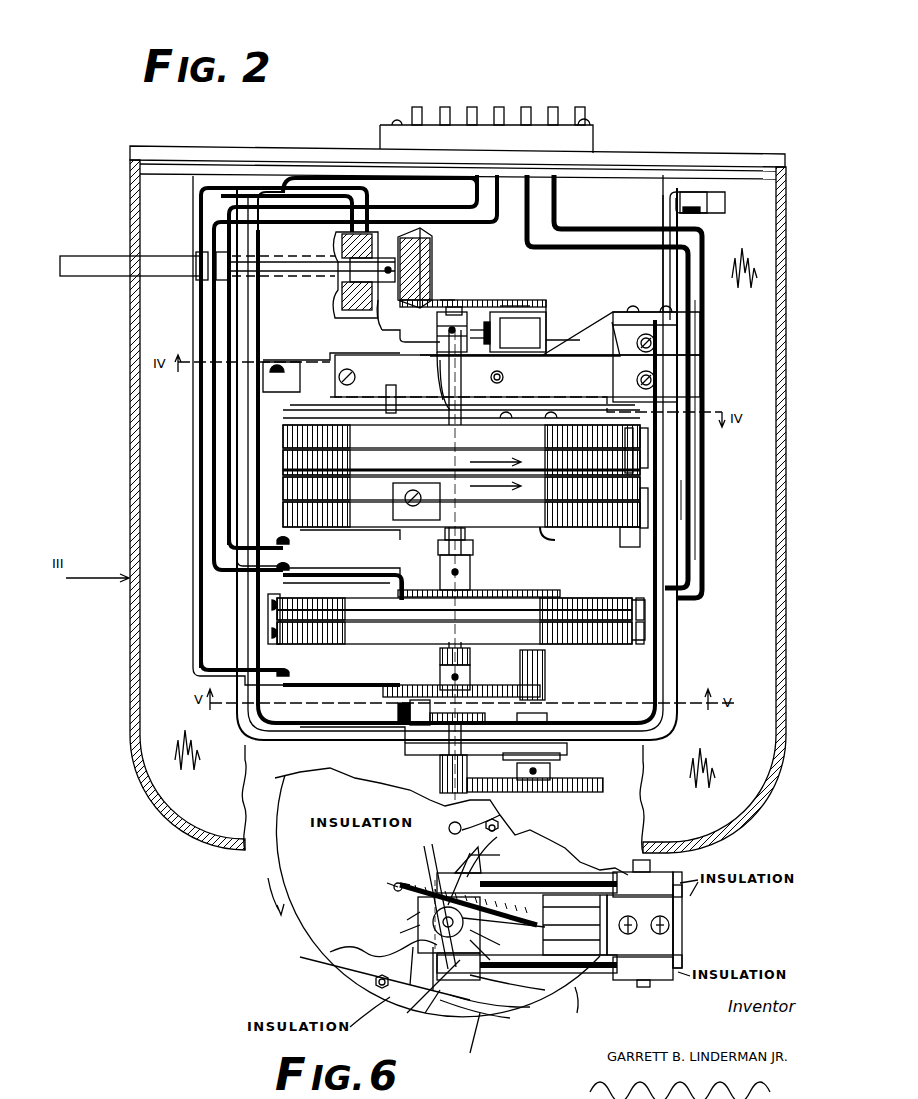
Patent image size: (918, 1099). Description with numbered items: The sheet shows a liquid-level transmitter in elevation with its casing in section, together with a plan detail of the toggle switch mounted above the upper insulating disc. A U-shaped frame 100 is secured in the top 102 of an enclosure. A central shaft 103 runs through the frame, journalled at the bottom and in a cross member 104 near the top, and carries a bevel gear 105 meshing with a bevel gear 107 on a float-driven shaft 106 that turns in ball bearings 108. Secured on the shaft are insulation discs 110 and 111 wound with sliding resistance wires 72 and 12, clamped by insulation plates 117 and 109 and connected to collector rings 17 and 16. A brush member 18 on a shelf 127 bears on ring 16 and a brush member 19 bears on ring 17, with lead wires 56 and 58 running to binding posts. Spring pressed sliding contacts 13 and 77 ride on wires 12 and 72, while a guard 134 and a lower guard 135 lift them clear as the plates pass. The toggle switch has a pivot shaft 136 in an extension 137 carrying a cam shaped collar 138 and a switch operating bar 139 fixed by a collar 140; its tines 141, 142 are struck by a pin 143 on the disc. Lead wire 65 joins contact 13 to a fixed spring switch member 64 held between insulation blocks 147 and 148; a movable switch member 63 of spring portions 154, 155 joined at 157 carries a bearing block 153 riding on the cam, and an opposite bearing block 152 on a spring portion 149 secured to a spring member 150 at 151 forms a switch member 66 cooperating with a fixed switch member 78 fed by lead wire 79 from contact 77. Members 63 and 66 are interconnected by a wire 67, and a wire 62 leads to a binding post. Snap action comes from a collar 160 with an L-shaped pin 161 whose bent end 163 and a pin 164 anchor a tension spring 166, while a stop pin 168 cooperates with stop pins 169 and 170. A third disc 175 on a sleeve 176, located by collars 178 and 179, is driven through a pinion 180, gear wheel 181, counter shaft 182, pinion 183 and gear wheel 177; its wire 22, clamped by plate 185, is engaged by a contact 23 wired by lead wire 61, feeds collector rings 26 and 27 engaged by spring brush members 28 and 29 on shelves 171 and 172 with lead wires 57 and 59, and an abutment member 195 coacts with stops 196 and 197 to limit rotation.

In FIG. 2, the sliding resistance wire 12 is at (283, 447).
In FIG. 2, the spring pressed sliding contact 13 is at (657, 453).
In FIG. 2, the collector ring 16 is at (548, 418).
In FIG. 2, the collector ring 17 is at (535, 532).
In FIG. 2, the spring pressed brush member 18 is at (328, 358).
In FIG. 2, the spring pressed brush member 19 is at (338, 567).
In FIG. 2, the sliding contact wire 22 is at (600, 652).
In FIG. 2, the spring pressed contact 23 is at (642, 614).
In FIG. 2, the collector ring 26 is at (382, 648).
In FIG. 2, the collector ring 27 is at (524, 584).
In FIG. 2, the spring brush member 28 is at (320, 686).
In FIG. 2, the spring brush member 29 is at (350, 535).
In FIG. 2, the lead wire 56 is at (290, 176).
In FIG. 2, the lead wire 57 is at (196, 628).
In FIG. 2, the lead wire 58 is at (322, 206).
In FIG. 2, the lead wire 59 is at (227, 523).
In FIG. 2, the lead wire 61 is at (704, 553).
In FIG. 2, the wire 62 is at (700, 349).
In FIG. 6, the wire 62 is at (683, 890).
In FIG. 6, the movable switch member 63 is at (612, 881).
In FIG. 6, the fixed spring switch member 64 is at (536, 876).
In FIG. 2, the lead wire 65 is at (705, 397).
In FIG. 6, the lead wire 65 is at (672, 873).
In FIG. 6, the switch member 66 is at (587, 1010).
In FIG. 6, the wire 67 is at (684, 917).
In FIG. 2, the sliding contact wire 72 is at (612, 538).
In FIG. 2, the spring pressed sliding contact 77 is at (696, 505).
In FIG. 6, the fixed spring switch member 78 is at (606, 975).
In FIG. 2, the lead wire 79 is at (697, 484).
In FIG. 6, the lead wire 79 is at (668, 960).
In FIG. 2, the U-shaped frame 100 is at (680, 676).
In FIG. 2, the top 102 is at (743, 141).
In FIG. 2, the central shaft 103 is at (474, 548).
In FIG. 6, the central shaft 103 is at (496, 813).
In FIG. 2, the cross member 104 is at (560, 301).
In FIG. 2, the bevel gear 105 is at (475, 301).
In FIG. 2, the shaft 106 is at (107, 255).
In FIG. 2, the bevel gear 107 is at (433, 258).
In FIG. 2, the ball bearings 108 is at (342, 253).
In FIG. 2, the insulation plate 109 is at (645, 468).
In FIG. 2, the insulation disc 110 is at (290, 490).
In FIG. 2, the insulation disc 111 is at (325, 425).
In FIG. 6, the insulation disc 111 is at (290, 861).
In FIG. 2, the insulation plate 117 is at (416, 503).
In FIG. 2, the shelf 127 is at (277, 388).
In FIG. 2, the guard 134 is at (624, 432).
In FIG. 2, the lower guard 135 is at (467, 556).
In FIG. 2, the pivot rod or shaft 136 is at (456, 299).
In FIG. 6, the pivot rod or shaft 136 is at (450, 904).
In FIG. 2, the extension 137 is at (570, 340).
In FIG. 6, the extension 137 is at (575, 925).
In FIG. 6, the cam shaped collar 138 is at (544, 990).
In FIG. 2, the switch operating bar 139 is at (430, 365).
In FIG. 6, the switch operating bar 139 is at (407, 920).
In FIG. 2, the collar 140 is at (443, 360).
In FIG. 6, the tine 141 is at (347, 949).
In FIG. 6, the tine 142 is at (455, 822).
In FIG. 2, the pin 143 is at (386, 395).
In FIG. 6, the pin 143 is at (500, 828).
In FIG. 6, the insulation block 147 is at (660, 990).
In FIG. 6, the insulation block 148 is at (649, 926).
In FIG. 2, the spring portion 149 is at (517, 376).
In FIG. 6, the spring portion 149 is at (505, 1006).
In FIG. 6, the spring member 150 is at (485, 1016).
In FIG. 2, the securing point 151 is at (513, 375).
In FIG. 6, the securing point 151 is at (463, 1043).
In FIG. 6, the bearing block 152 is at (415, 997).
In FIG. 6, the bearing block 153 is at (433, 868).
In FIG. 6, the spring portion 154 is at (494, 863).
In FIG. 6, the spring portion 155 is at (571, 903).
In FIG. 6, the securing point 157 is at (497, 837).
In FIG. 2, the collar 160 is at (437, 332).
In FIG. 6, the collar 160 is at (400, 933).
In FIG. 2, the L-shaped rod or pin 161 is at (405, 327).
In FIG. 6, the L-shaped rod or pin 161 is at (387, 883).
In FIG. 2, the bent end 163 is at (402, 303).
In FIG. 6, the bent end 163 is at (400, 883).
In FIG. 2, the pin 164 is at (563, 330).
In FIG. 6, the pin 164 is at (571, 947).
In FIG. 2, the tension spring 166 is at (516, 300).
In FIG. 6, the tension spring 166 is at (548, 923).
In FIG. 2, the stop pin 168 is at (518, 329).
In FIG. 6, the stop pin 168 is at (492, 945).
In FIG. 2, the stop pin 169 is at (450, 306).
In FIG. 6, the stop pin 169 is at (440, 1005).
In FIG. 2, the stop pin 170 is at (501, 334).
In FIG. 6, the stop pin 170 is at (526, 913).
In FIG. 2, the shelf 171 is at (250, 658).
In FIG. 2, the shelf 172 is at (267, 558).
In FIG. 2, the third disc 175 is at (644, 633).
In FIG. 2, the sleeve 176 is at (472, 660).
In FIG. 2, the gear wheel 177 is at (508, 688).
In FIG. 2, the collar 178 is at (473, 575).
In FIG. 2, the collar 179 is at (426, 713).
In FIG. 2, the pinion 180 is at (440, 770).
In FIG. 2, the gear wheel 181 is at (604, 784).
In FIG. 2, the counter shaft 182 is at (568, 753).
In FIG. 2, the pinion 183 is at (541, 696).
In FIG. 2, the plate 185 is at (272, 598).
In FIG. 2, the abutment member 195 is at (397, 713).
In FIG. 2, the stop 196 is at (461, 727).
In FIG. 2, the stop 197 is at (516, 717).